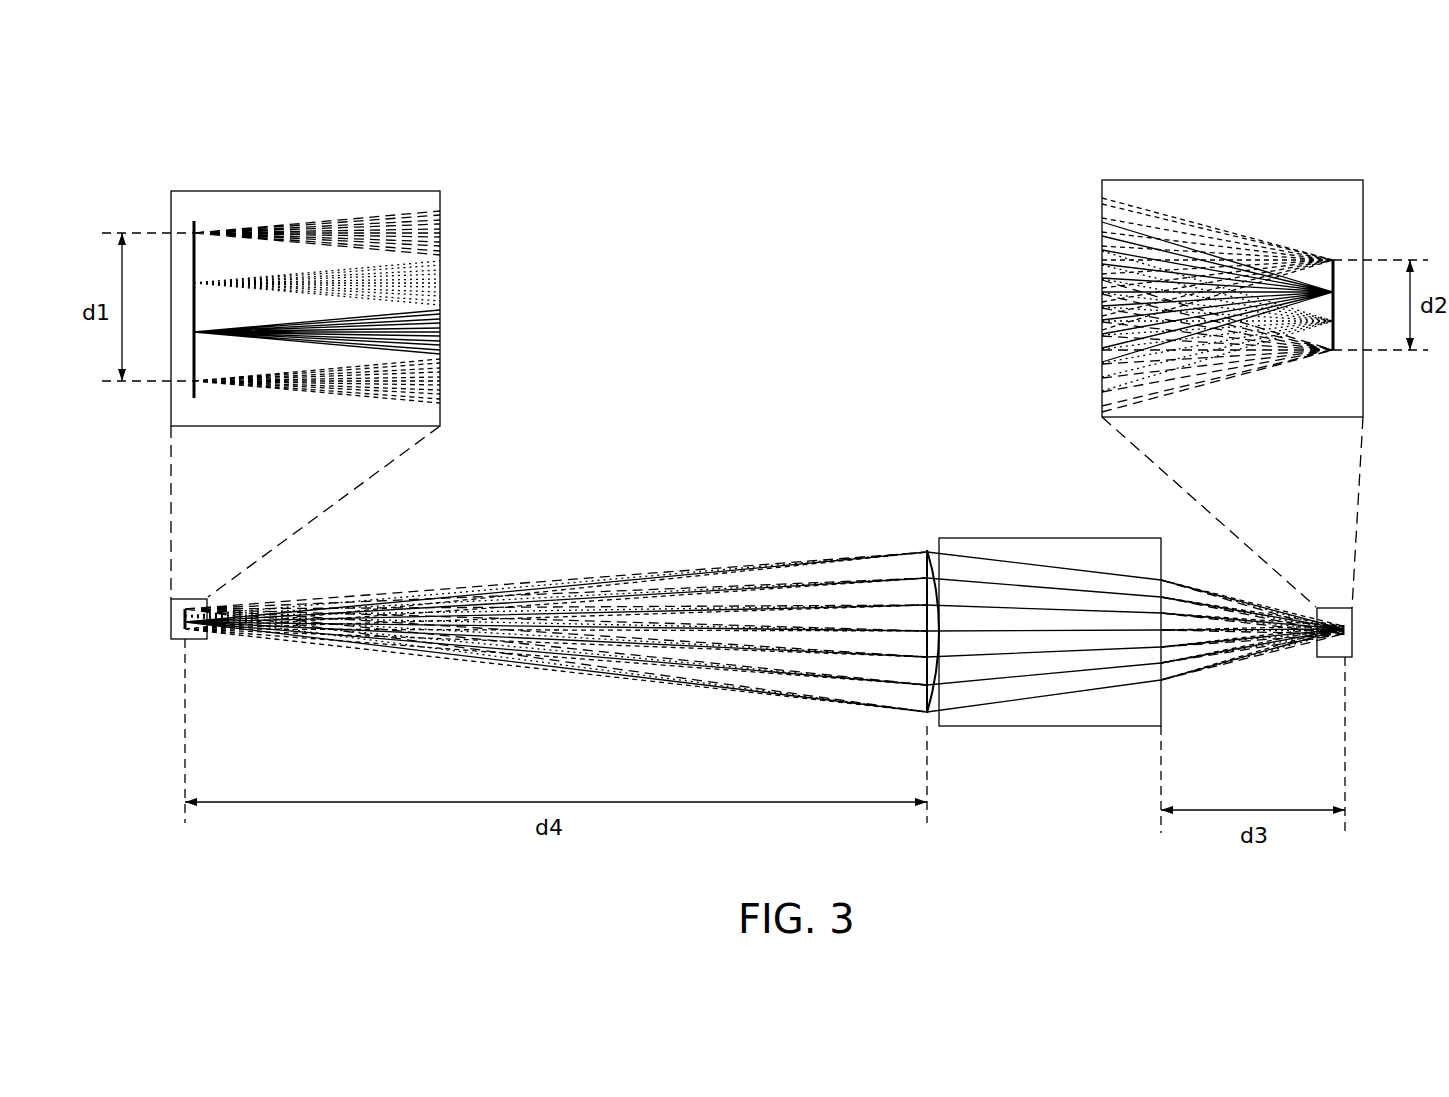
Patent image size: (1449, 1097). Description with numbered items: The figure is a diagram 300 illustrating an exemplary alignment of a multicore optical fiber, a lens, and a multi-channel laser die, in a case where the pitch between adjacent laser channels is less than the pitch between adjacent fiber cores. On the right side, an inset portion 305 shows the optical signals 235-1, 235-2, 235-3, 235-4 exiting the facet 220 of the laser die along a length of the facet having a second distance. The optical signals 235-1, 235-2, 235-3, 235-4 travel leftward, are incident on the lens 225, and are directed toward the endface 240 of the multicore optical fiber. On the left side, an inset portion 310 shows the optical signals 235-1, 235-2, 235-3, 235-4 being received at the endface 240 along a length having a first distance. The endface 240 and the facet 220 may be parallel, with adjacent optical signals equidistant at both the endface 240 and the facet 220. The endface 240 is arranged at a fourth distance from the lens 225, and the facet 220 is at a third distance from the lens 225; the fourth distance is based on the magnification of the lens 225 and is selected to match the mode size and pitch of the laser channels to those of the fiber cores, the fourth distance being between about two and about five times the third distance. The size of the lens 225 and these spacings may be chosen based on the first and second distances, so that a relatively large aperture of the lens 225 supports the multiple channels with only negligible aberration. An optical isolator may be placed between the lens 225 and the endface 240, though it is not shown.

The diagram 300 is at (1370, 98).
The inset portion 305 is at (1172, 180).
The inset portion 310 is at (345, 191).
The facet 220 is at (1333, 277).
The lens 225 is at (1000, 538).
The endface 240 is at (194, 258).
The optical signal 235-1 is at (440, 381).
The optical signal 235-2 is at (440, 332).
The optical signal 235-3 is at (440, 283).
The optical signal 235-4 is at (440, 235).